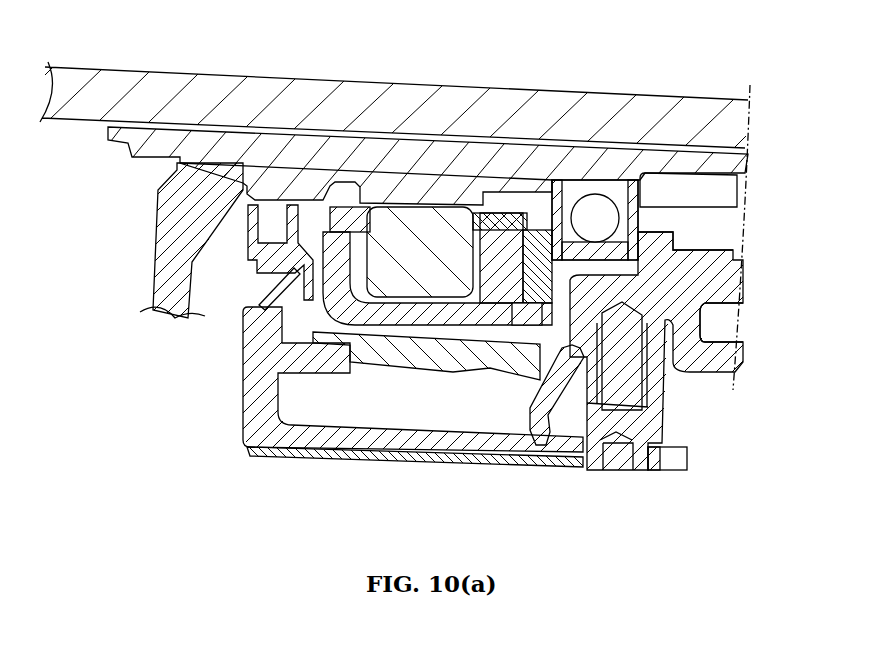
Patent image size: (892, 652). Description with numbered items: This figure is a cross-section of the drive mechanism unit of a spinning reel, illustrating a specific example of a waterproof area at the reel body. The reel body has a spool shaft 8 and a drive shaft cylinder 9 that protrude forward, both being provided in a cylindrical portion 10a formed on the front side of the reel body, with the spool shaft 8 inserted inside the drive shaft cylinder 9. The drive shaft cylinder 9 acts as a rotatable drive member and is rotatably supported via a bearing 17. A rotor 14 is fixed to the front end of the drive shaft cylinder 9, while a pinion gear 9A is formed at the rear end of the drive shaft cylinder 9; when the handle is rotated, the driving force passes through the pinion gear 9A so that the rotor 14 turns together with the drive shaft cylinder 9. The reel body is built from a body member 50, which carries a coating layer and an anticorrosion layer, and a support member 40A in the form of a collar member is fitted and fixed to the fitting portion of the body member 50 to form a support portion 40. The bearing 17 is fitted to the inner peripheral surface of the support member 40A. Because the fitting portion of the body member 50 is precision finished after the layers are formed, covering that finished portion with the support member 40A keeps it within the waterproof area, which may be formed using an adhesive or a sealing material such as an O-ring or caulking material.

The spool shaft 8 is at (393, 105).
The drive shaft cylinder 9 is at (470, 160).
The pinion gear 9A is at (710, 195).
The rotor 14 is at (165, 263).
The support portion 40 is at (672, 300).
The support member 40A is at (678, 243).
The body member 50 is at (718, 330).
The cylindrical portion 10a is at (473, 355).
The bearing 17 is at (597, 222).